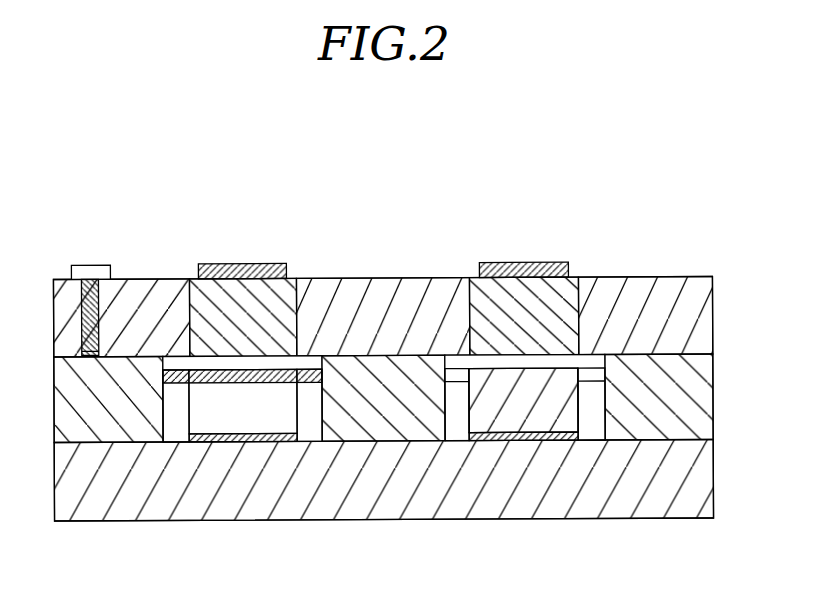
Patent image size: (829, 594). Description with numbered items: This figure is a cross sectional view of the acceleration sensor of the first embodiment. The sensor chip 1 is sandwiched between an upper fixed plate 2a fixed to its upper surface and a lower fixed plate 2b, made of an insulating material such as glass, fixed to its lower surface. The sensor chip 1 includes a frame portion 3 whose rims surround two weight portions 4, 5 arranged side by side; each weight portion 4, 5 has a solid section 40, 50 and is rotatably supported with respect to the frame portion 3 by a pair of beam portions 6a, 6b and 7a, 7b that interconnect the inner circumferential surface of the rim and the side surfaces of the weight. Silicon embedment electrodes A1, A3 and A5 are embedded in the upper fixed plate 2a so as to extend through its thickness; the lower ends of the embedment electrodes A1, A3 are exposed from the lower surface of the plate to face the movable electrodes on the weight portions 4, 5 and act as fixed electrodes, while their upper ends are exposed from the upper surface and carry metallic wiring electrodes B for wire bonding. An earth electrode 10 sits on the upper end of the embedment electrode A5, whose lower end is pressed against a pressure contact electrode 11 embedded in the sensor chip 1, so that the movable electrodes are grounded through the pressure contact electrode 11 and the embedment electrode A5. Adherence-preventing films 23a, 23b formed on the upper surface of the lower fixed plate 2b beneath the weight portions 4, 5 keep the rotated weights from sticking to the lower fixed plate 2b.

The sensor chip 1 is at (714, 427).
The upper fixed plate 2a is at (702, 308).
The lower fixed plate 2b is at (705, 477).
The frame portion 3 is at (698, 385).
The weight portion 4 is at (278, 412).
The weight portion 5 is at (558, 410).
The beam portion 6a is at (176, 377).
The beam portion 6b is at (312, 373).
The beam portion 7a is at (458, 373).
The beam portion 7b is at (595, 373).
The earth electrode 10 is at (93, 264).
The pressure contact electrode 11 is at (88, 354).
The adherence-preventing film 23a is at (248, 440).
The adherence-preventing film 23b is at (530, 440).
The solid section 40 is at (227, 415).
The solid section 50 is at (507, 415).
The embedment electrode A1 is at (252, 307).
The embedment electrode A3 is at (532, 303).
The embedment electrode A5 is at (90, 318).
The wiring electrode B is at (232, 263).